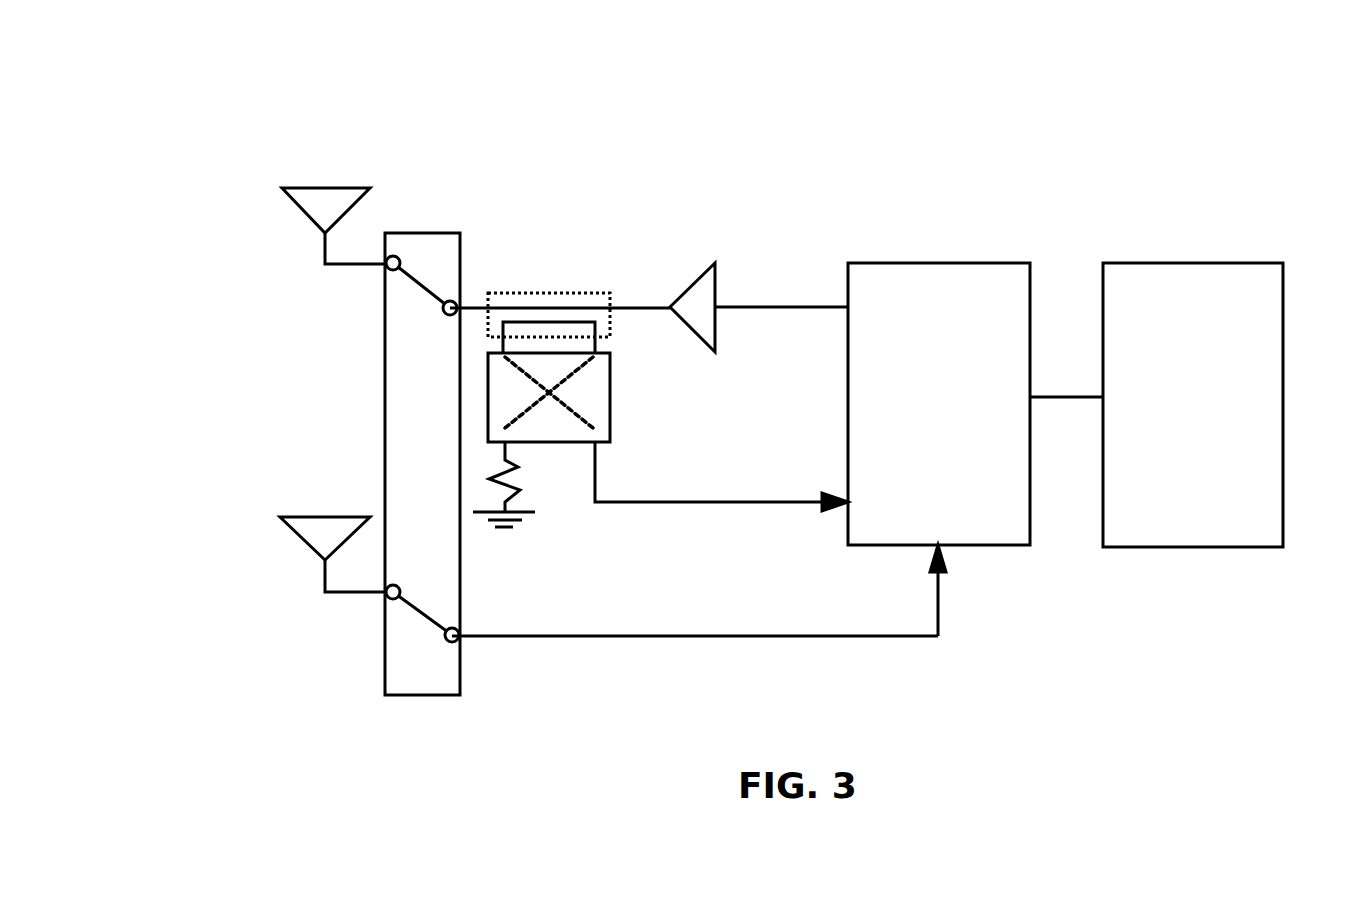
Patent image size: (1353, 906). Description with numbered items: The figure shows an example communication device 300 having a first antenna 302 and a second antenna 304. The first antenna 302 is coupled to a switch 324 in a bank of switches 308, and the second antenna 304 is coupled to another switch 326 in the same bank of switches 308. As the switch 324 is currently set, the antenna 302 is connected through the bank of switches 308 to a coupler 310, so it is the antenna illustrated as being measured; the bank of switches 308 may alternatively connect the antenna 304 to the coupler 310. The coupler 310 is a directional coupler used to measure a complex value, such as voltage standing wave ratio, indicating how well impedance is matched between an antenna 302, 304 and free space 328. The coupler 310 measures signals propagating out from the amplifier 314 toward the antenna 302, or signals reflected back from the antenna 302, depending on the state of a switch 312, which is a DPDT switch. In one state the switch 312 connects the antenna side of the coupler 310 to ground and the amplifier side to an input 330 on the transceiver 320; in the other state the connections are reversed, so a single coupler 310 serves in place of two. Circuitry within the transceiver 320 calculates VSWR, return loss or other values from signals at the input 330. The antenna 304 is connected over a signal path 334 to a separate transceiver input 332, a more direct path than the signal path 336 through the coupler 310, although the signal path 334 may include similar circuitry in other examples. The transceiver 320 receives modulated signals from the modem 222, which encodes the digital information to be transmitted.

The communication device 300 is at (215, 84).
The free space 328 is at (412, 116).
The first antenna 302 is at (303, 217).
The second antenna 304 is at (308, 547).
The bank of switches 308 is at (442, 697).
The switch 324 is at (445, 317).
The switch 326 is at (450, 645).
The signal path 336 is at (660, 311).
The coupler 310 is at (610, 298).
The switch 312 is at (612, 434).
The amplifier 314 is at (718, 267).
The input 330 is at (846, 508).
The transceiver 320 is at (885, 548).
The input 332 is at (943, 550).
The signal path 334 is at (752, 638).
The modem 222 is at (1173, 548).